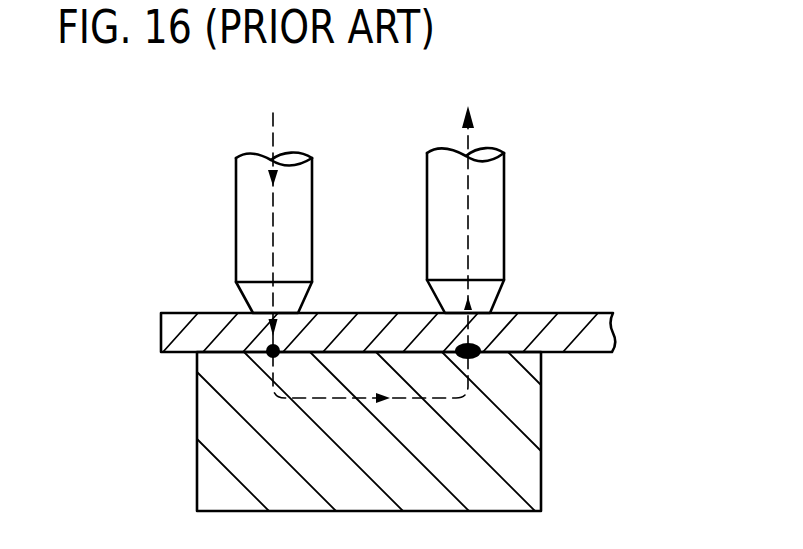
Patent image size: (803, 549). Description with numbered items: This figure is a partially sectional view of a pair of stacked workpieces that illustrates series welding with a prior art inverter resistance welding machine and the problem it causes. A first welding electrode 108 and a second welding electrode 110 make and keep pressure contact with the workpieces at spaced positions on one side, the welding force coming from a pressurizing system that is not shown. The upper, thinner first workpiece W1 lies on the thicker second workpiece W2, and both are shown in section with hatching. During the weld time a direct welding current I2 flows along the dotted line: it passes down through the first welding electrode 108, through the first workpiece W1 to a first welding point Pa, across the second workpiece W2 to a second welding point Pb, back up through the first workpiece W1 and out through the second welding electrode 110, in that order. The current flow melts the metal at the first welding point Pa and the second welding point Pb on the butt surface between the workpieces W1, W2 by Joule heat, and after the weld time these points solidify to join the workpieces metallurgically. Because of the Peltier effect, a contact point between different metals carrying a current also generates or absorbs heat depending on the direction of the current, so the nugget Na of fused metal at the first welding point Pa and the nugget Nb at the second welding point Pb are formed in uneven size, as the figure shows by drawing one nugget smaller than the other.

The first welding electrode 108 is at (243, 208).
The second welding electrode 110 is at (500, 197).
The first workpiece W1 is at (597, 313).
The second workpiece W2 is at (527, 470).
The nugget Na is at (171, 409).
The first welding point Pa is at (274, 352).
The nugget Nb is at (582, 392).
The second welding point Pb is at (478, 357).
The direct welding current I2 is at (385, 251).